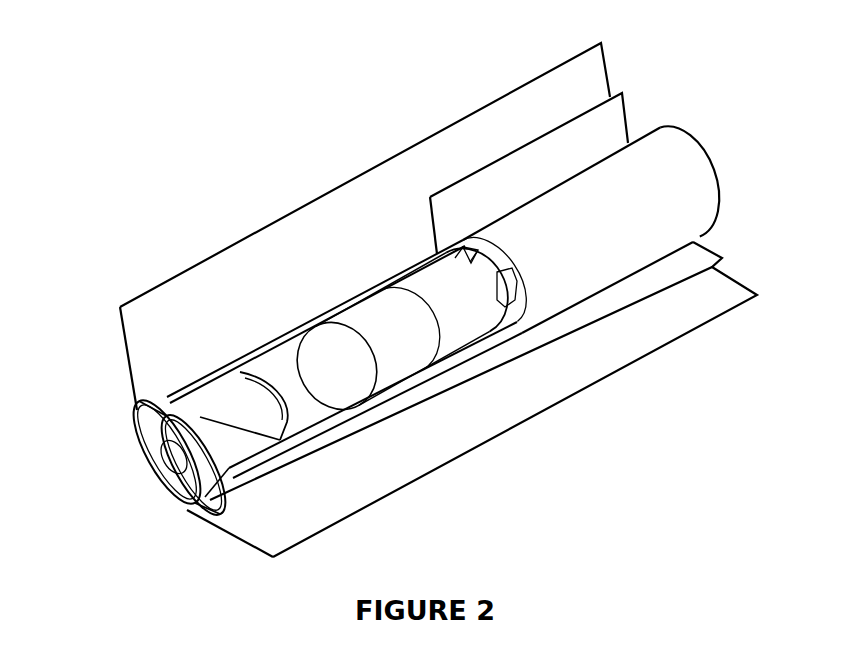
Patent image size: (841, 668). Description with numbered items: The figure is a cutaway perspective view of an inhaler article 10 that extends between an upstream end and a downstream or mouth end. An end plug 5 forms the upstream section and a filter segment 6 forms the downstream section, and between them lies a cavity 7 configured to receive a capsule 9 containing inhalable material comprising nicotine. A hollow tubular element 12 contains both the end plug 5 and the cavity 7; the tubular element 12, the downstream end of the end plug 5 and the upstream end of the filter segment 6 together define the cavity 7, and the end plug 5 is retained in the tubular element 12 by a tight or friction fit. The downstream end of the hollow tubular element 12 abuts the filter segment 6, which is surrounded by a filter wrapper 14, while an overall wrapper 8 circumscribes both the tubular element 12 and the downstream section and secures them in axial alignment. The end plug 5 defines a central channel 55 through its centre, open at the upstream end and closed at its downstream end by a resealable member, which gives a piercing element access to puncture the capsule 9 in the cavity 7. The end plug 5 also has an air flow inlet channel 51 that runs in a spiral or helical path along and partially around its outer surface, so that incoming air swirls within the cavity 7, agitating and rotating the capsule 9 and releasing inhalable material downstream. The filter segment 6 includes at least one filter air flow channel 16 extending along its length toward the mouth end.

The inhaler article 10 is at (380, 153).
The capsule 9 is at (387, 323).
The cavity 7 is at (282, 372).
The filter segment 6 is at (657, 207).
The filter wrapper 14 is at (623, 300).
The filter air flow channel 16 is at (517, 287).
The overall wrapper 8 is at (517, 393).
The hollow tubular element 12 is at (415, 380).
The end plug 5 is at (150, 445).
The central channel 55 is at (180, 462).
The air flow inlet channel 51 is at (250, 430).